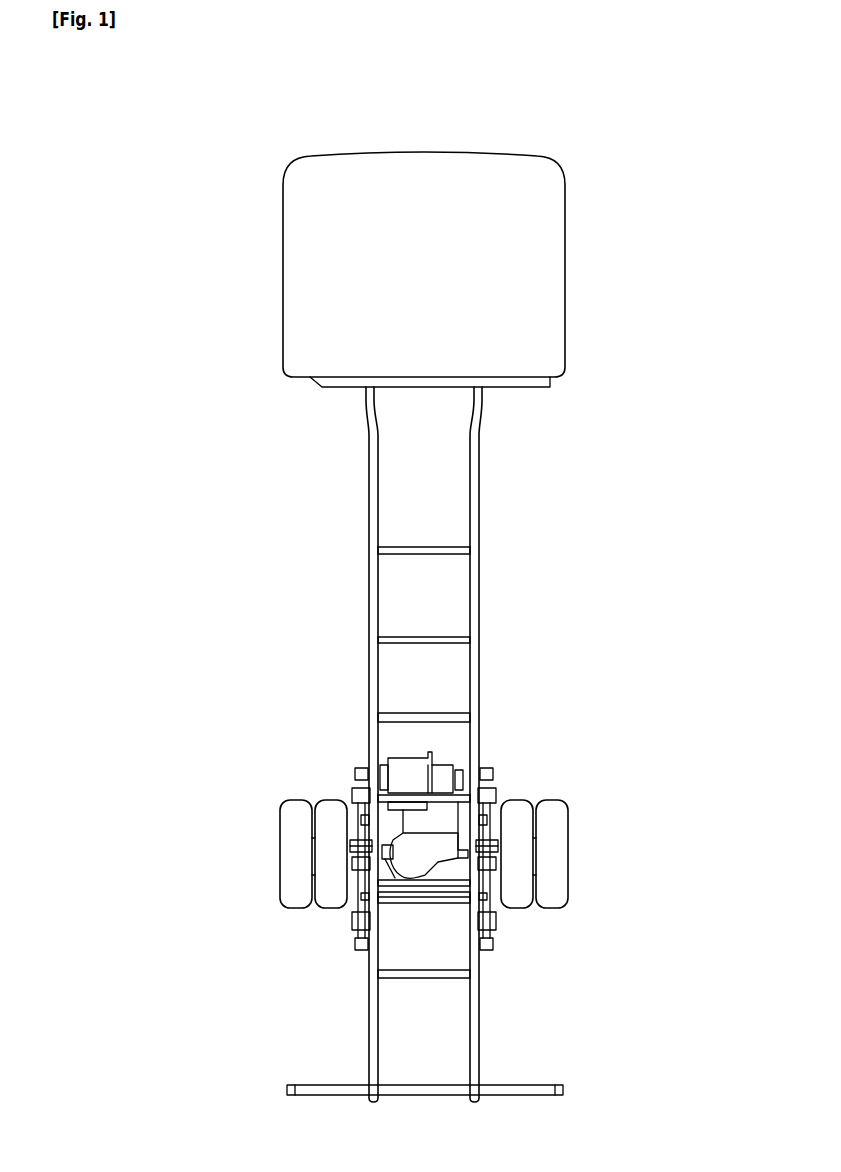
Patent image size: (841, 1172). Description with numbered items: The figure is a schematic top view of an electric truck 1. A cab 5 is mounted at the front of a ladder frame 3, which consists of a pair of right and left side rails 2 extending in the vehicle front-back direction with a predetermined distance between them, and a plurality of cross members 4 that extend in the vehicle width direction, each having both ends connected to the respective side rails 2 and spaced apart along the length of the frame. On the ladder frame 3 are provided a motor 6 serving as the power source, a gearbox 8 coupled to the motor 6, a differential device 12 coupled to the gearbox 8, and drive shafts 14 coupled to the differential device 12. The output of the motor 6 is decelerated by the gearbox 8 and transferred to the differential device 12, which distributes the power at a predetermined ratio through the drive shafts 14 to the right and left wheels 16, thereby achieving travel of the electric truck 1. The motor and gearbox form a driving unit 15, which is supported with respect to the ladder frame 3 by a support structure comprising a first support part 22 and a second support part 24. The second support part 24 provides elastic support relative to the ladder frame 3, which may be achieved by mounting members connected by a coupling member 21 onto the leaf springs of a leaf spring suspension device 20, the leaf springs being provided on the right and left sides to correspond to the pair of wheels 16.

The electric truck 1 is at (634, 146).
The side rail 2 is at (366, 503).
The ladder frame 3 is at (510, 462).
The cross member 4 is at (425, 545).
The cab 5 is at (565, 270).
The motor 6 is at (404, 757).
The gearbox 8 is at (440, 752).
The differential device 12 is at (422, 882).
The drive shaft 14 is at (388, 882).
The driving unit 15 is at (388, 752).
The wheel 16 is at (278, 852).
The leaf spring suspension device 20 is at (354, 783).
The coupling member 21 is at (438, 884).
The first support part 22 is at (456, 752).
The second support part 24 is at (343, 915).